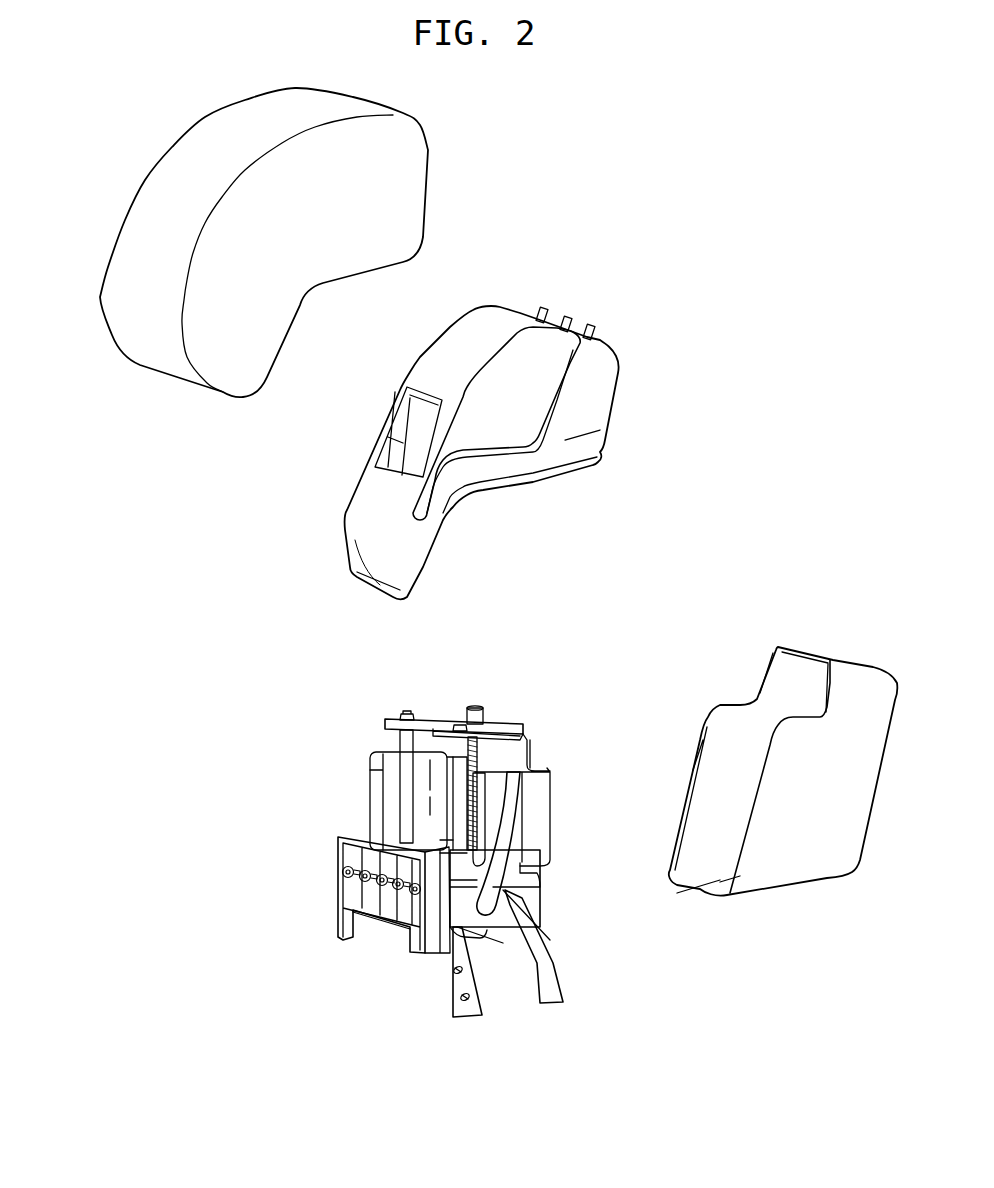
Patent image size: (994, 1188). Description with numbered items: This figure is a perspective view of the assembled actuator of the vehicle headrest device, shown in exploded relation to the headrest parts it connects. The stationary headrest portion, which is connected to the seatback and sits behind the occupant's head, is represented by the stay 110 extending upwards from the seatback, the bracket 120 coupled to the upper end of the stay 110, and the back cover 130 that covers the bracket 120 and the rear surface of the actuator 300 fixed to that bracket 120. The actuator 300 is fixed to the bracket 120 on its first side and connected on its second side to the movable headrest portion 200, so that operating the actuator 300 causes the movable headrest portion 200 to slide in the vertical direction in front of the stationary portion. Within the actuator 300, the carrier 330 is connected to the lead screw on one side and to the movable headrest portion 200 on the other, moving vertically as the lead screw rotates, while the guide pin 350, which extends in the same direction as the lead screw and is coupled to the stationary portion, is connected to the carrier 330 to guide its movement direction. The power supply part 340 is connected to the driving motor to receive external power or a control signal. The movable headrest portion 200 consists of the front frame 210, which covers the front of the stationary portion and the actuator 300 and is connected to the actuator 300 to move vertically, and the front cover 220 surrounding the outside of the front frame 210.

The stay 110 is at (545, 976).
The bracket 120 is at (530, 747).
The back cover 130 is at (853, 687).
The movable headrest portion 200 is at (213, 600).
The front frame 210 is at (358, 528).
The front cover 220 is at (148, 350).
The actuator 300 is at (330, 972).
The carrier 330 is at (360, 890).
The power supply part 340 is at (545, 830).
The guide pin 350 is at (405, 743).